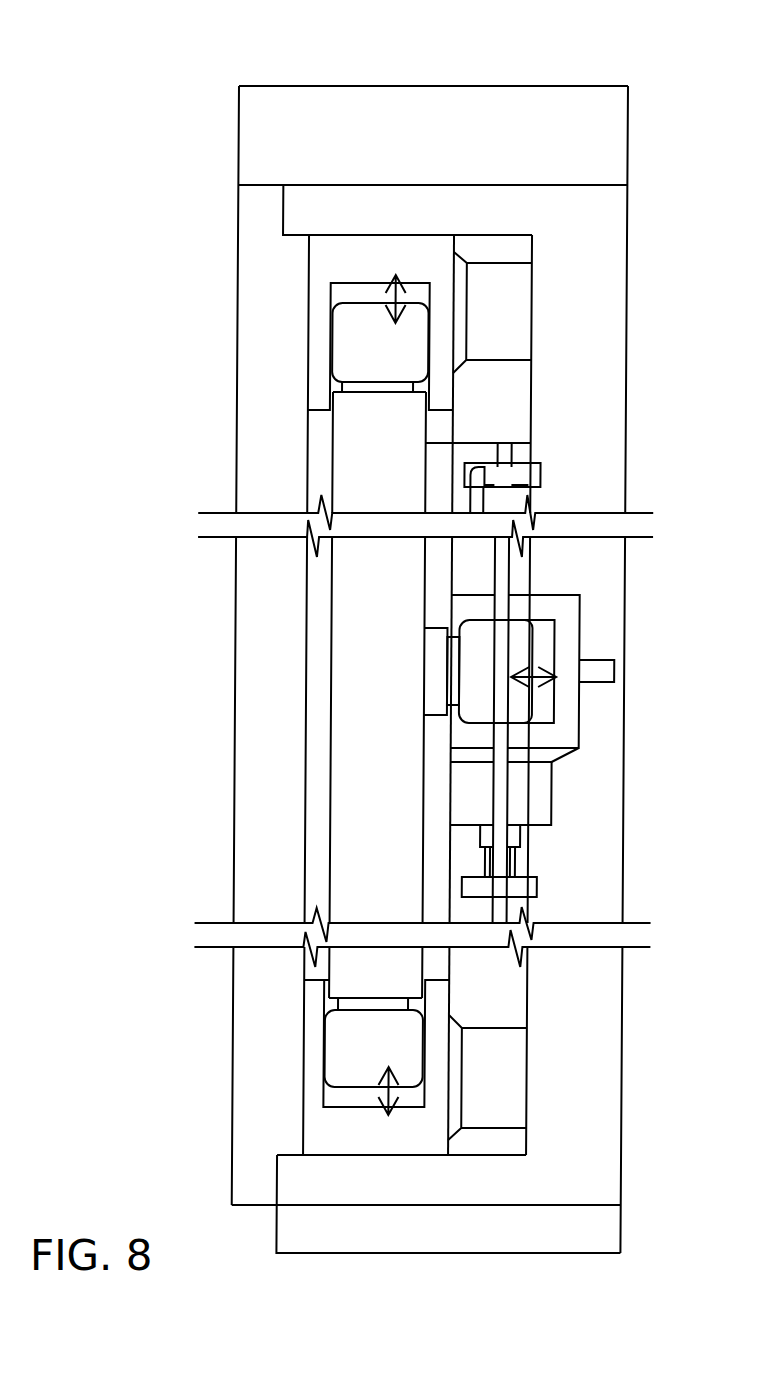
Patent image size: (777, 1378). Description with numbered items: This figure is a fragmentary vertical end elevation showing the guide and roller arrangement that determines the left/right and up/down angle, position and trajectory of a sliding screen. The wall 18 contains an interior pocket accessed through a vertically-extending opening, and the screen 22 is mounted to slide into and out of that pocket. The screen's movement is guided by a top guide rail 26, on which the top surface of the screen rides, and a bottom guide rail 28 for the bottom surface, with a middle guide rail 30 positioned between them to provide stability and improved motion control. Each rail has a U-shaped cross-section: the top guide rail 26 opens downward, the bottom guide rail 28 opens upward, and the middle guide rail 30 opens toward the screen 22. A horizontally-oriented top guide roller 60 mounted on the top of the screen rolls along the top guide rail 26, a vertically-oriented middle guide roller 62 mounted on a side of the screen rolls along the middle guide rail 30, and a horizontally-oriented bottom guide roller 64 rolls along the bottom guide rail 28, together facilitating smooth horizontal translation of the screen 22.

The wall 18 is at (588, 98).
The screen 22 is at (604, 343).
The top guide rail 26 is at (330, 256).
The top guide roller 60 is at (355, 348).
The middle guide rail 30 is at (468, 612).
The middle guide roller 62 is at (476, 667).
The bottom guide rail 28 is at (321, 1013).
The bottom guide roller 64 is at (349, 1063).